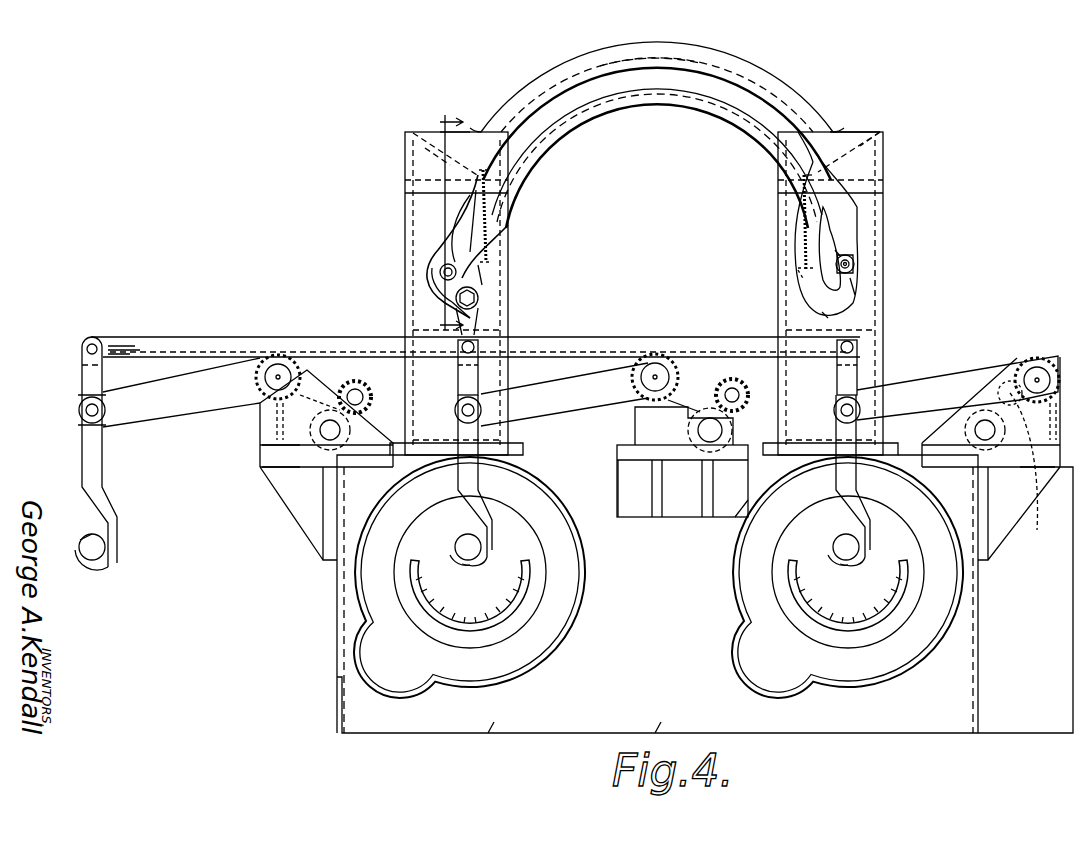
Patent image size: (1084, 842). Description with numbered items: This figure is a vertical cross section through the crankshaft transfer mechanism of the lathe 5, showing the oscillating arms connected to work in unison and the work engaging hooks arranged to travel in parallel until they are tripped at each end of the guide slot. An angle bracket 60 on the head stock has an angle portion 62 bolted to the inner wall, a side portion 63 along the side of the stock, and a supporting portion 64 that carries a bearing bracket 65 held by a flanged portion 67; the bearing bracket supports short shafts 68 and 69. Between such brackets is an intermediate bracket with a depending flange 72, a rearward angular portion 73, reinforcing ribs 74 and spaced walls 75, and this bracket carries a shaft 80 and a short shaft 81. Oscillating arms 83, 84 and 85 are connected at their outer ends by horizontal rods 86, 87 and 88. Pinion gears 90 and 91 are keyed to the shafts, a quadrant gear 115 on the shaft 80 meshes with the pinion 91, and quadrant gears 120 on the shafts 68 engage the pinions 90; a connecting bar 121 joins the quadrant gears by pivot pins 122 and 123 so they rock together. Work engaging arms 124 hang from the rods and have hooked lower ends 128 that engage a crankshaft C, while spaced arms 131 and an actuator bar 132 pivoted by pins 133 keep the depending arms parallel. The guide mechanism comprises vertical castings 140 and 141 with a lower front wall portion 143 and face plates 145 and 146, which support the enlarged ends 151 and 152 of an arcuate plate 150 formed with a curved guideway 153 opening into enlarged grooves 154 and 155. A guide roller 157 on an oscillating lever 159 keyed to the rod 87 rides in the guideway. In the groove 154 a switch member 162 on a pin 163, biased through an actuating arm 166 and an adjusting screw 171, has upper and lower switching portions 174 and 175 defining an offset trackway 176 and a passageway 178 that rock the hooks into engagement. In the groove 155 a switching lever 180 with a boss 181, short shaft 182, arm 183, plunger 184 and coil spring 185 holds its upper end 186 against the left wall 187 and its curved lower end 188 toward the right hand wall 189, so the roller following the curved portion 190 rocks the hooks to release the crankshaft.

The lathe 5 is at (469, 218).
The angle bracket 60 is at (280, 500).
The angle portion 62 is at (345, 530).
The side portion 63 is at (320, 510).
The supporting portion 64 is at (262, 462).
The bearing bracket 65 is at (277, 420).
The flanged portion 67 is at (262, 450).
The short shaft 68 is at (325, 435).
The short shaft 69 is at (277, 372).
The depending flange 72 is at (700, 507).
The angular portion 73 is at (748, 445).
The reinforcing rib 74 is at (705, 485).
The spaced wall 75 is at (632, 478).
The shaft 80 is at (733, 388).
The shaft 81 is at (668, 360).
The oscillating arm 83 is at (163, 405).
The oscillating arm 84 is at (600, 375).
The oscillating arm 85 is at (955, 378).
The horizontal rod 86 is at (80, 410).
The horizontal rod 87 is at (462, 412).
The horizontal rod 88 is at (838, 412).
The pinion gear 90 is at (260, 358).
The pinion gear 91 is at (657, 368).
The quadrant gear 115 is at (712, 382).
The quadrant gear 120 is at (348, 380).
The connecting bar 121 is at (735, 380).
The pivot pin 122 is at (358, 395).
The pivot pin 123 is at (733, 405).
The work engaging arm 124 is at (85, 465).
The hooked lower end 128 is at (110, 560).
The spaced apart arm 131 is at (85, 365).
The actuator bar 132 is at (583, 338).
The pivot pin 133 is at (90, 347).
The vertical casting 140 is at (440, 267).
The vertical casting 141 is at (856, 264).
The lower front wall portion 143 is at (505, 437).
The upper front wall portion 145 is at (463, 217).
The upper front wall portion 146 is at (857, 265).
The arcuate plate 150 is at (772, 75).
The enlarged end 151 is at (467, 157).
The enlarged end 152 is at (853, 130).
The curved guideway 153 is at (680, 70).
The enlarged guideway groove 154 is at (433, 218).
The enlarged guideway groove 155 is at (843, 227).
The guide roller 157 is at (478, 298).
The oscillating lever 159 is at (480, 315).
The switch member 162 is at (470, 252).
The pin 163 is at (405, 238).
The actuating arm 166 is at (480, 280).
The adjusting screw 171 is at (425, 148).
The upper switching portion 174 is at (467, 245).
The lower switching portion 175 is at (453, 290).
The offset curved trackway 176 is at (427, 265).
The passageway 178 is at (486, 262).
The switching lever 180 is at (853, 260).
The boss 181 is at (860, 290).
The short shaft 182 is at (855, 272).
The arm 183 is at (808, 262).
The plunger 184 is at (797, 238).
The coil spring 185 is at (805, 215).
The upper end 186 is at (830, 217).
The left wall 187 is at (810, 207).
The curved lower end 188 is at (835, 320).
The right hand wall 189 is at (840, 250).
The curved portion 190 is at (830, 318).
The crankshaft C is at (93, 567).